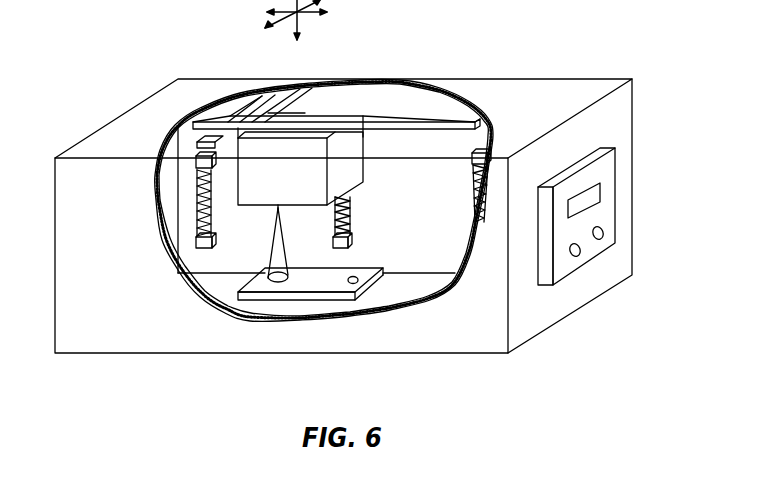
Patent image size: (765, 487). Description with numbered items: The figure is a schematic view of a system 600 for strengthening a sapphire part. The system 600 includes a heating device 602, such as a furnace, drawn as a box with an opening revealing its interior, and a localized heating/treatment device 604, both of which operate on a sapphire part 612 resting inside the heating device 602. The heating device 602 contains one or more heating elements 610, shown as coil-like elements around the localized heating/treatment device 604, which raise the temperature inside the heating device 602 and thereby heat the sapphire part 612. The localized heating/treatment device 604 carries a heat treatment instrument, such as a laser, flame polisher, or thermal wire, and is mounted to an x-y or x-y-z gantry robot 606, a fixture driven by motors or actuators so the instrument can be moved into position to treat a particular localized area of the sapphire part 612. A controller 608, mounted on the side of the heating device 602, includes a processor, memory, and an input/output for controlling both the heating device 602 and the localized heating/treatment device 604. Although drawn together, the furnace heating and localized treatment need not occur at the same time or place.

The system 600 is at (75, 67).
The heating device 602 is at (92, 353).
The localized heating/treatment device 604 is at (345, 163).
The gantry robot 606 is at (385, 130).
The controller 608 is at (617, 183).
The heating elements 610 is at (352, 208).
The sapphire part 612 is at (340, 300).